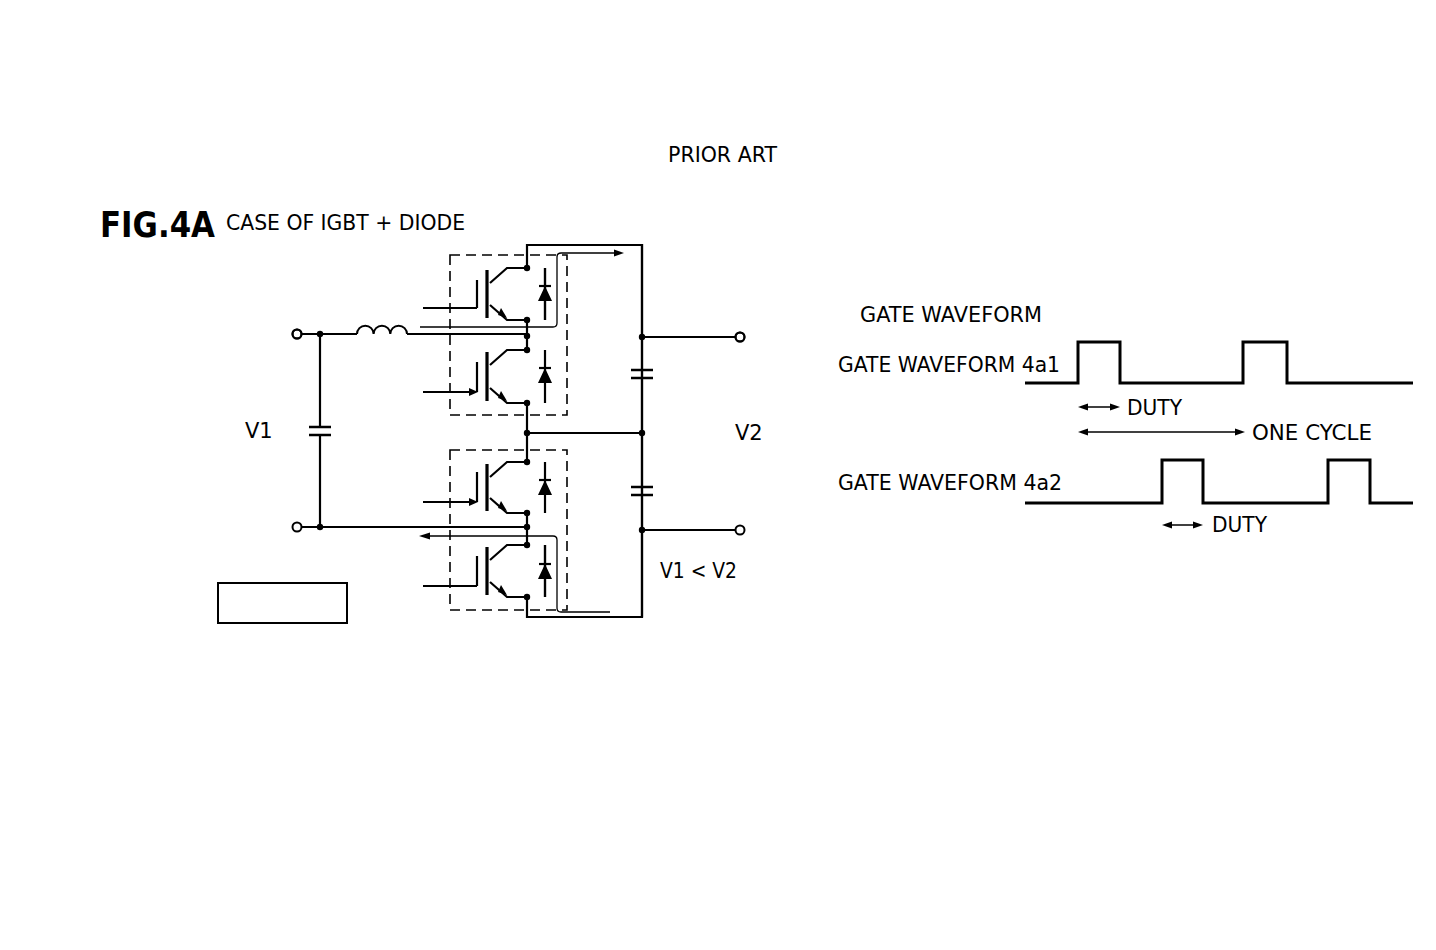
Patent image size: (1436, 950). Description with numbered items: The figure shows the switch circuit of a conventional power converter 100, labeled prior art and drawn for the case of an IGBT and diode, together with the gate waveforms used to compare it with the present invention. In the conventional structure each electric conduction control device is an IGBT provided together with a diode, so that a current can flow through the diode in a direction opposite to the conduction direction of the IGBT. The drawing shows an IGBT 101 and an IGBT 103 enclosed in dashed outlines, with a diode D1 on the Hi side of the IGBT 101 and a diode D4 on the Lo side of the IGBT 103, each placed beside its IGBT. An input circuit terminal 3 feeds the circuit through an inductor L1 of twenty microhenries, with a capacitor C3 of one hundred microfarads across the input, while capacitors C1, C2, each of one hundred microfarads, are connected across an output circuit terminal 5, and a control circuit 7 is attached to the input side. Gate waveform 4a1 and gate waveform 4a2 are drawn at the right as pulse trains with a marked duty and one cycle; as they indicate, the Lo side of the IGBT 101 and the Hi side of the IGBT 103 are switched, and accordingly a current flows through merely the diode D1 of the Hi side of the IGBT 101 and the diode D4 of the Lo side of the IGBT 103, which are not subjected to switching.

The input circuit terminal 3 is at (270, 306).
The output circuit terminal 5 is at (736, 308).
The control circuit 7 is at (281, 583).
The conventional power converter 100 is at (650, 257).
The IGBT 101 is at (464, 329).
The IGBT 103 is at (465, 535).
The gate waveform 4a1 is at (438, 392).
The gate waveform 4a2 is at (438, 502).
The diode D1 is at (551, 290).
The diode D4 is at (551, 566).
The inductor L1 (20 µH) L1 is at (381, 338).
The capacitor C1 (100 µF) C1 is at (658, 373).
The capacitor C2 (100 µF) C2 is at (658, 490).
The capacitor C3 (100 µF) C3 is at (346, 448).